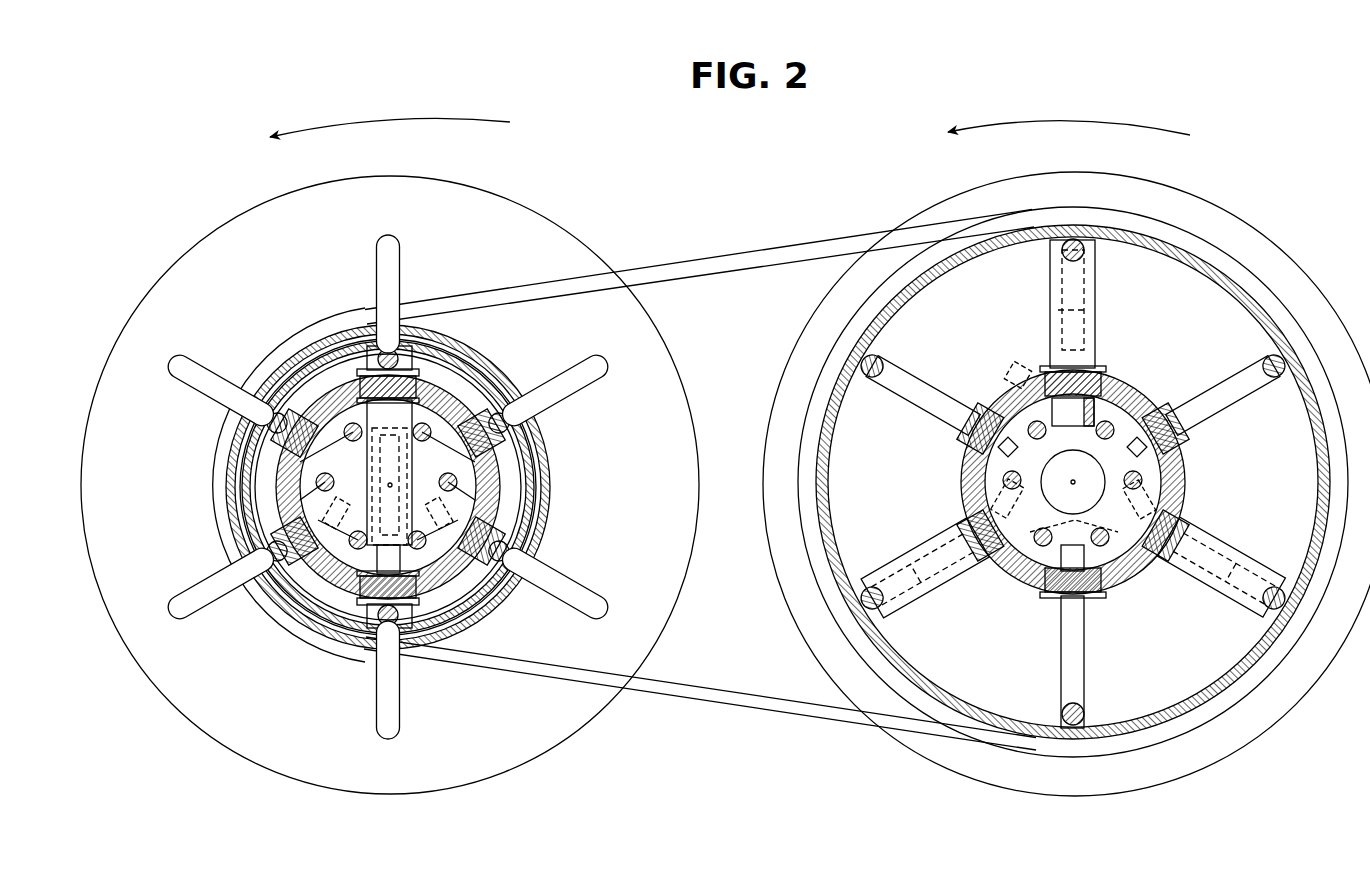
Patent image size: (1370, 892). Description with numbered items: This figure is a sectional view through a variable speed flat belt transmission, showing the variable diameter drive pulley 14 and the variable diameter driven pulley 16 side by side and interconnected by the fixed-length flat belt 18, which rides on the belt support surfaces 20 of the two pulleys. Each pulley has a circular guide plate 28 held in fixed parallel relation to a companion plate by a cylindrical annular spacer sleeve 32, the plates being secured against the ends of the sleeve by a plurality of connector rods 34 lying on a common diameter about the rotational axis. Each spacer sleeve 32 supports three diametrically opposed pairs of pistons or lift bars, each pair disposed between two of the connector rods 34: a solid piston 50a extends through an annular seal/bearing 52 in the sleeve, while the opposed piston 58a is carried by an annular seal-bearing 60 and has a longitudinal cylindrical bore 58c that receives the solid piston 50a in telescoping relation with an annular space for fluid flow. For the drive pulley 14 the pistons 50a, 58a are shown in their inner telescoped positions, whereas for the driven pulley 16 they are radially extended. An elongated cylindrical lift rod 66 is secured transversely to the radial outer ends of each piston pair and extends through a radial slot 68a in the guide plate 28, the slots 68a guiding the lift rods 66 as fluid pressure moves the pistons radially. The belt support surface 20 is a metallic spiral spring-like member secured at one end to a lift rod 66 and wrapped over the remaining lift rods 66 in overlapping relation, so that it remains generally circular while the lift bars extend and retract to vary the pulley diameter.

The variable diameter drive pulley 14 is at (606, 749).
The variable diameter driven pulley 16 is at (868, 768).
The flat belt 18 is at (725, 256).
The belt support surface 20 is at (470, 358).
The circular guide plate 28 is at (537, 742).
The cylindrical annular spacer sleeve 32 is at (470, 580).
The connector rod 34 is at (1030, 422).
The piston 50a is at (300, 470).
The annular seal/bearing 52 is at (510, 392).
The piston 58a is at (345, 340).
The longitudinal cylindrical bore 58c is at (1074, 528).
The annular seal-bearing 60 is at (428, 352).
The lift rod 66 is at (378, 345).
The radial slot 68a is at (398, 280).